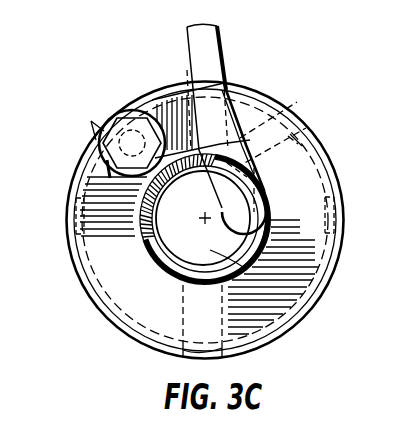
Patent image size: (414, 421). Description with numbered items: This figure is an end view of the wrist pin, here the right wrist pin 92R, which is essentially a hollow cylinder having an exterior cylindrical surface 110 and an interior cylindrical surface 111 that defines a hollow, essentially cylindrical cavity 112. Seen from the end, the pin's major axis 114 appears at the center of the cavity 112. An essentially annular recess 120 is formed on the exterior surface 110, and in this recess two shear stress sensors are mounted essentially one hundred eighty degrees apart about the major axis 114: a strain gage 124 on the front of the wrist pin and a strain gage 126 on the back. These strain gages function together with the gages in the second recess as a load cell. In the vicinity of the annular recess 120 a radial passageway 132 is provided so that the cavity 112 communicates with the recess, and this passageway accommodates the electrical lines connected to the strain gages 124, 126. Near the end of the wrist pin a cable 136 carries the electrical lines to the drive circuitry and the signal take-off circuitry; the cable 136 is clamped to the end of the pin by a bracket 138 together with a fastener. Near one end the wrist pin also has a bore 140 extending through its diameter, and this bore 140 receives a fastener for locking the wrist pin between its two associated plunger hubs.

The exterior cylindrical surface 110 is at (91, 298).
The interior cylindrical surface 111 is at (157, 253).
The cavity 112 is at (254, 274).
The major axis 114 is at (203, 216).
The annular recess 120 is at (333, 196).
The strain gage 124 is at (337, 218).
The strain gage 126 is at (68, 218).
The radial passageway 132 is at (299, 146).
The cable 136 is at (210, 44).
The bracket 138 is at (168, 100).
The bore 140 is at (183, 328).
The right wrist pin 92R is at (348, 262).